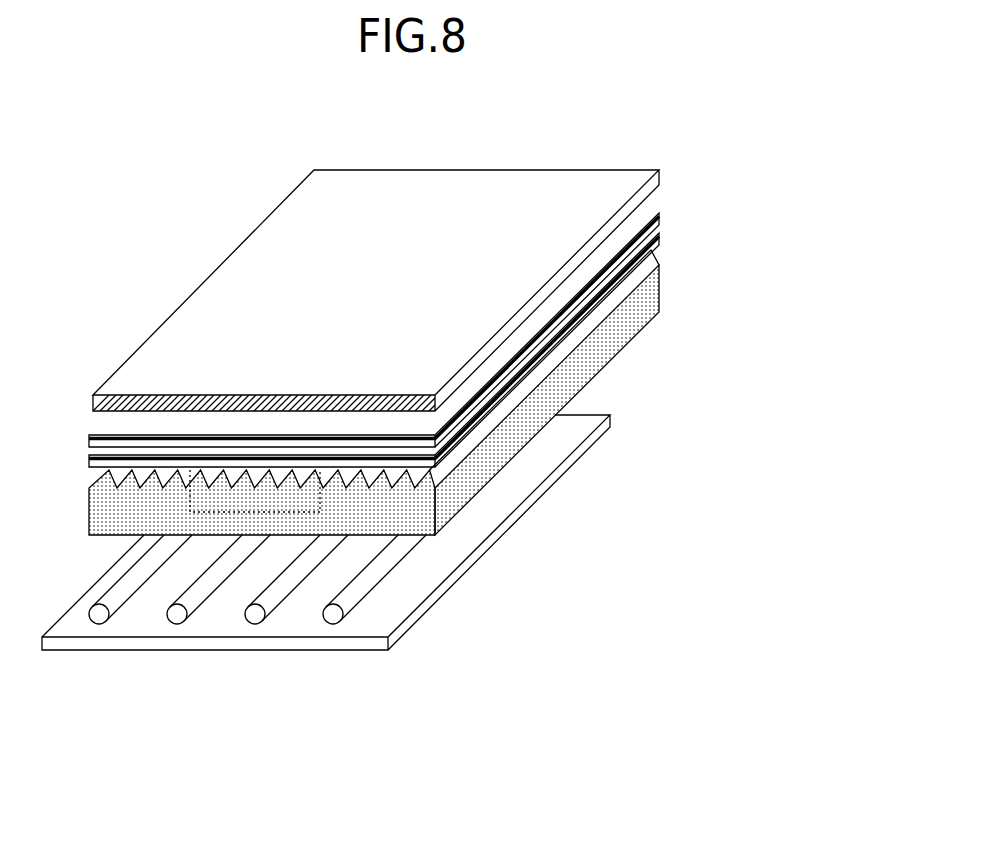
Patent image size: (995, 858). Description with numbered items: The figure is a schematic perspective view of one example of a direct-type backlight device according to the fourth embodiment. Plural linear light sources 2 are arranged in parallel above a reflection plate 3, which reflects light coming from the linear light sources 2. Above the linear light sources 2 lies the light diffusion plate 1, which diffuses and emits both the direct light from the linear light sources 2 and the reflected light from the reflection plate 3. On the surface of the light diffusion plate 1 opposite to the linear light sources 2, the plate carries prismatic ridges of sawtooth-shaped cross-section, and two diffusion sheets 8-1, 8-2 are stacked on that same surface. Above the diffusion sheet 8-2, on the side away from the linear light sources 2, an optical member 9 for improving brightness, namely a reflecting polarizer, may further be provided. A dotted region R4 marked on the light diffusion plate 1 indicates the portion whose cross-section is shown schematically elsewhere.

The optical member for improving brightness 9 is at (536, 184).
The diffusion sheet 8-2 is at (659, 219).
The diffusion sheet 8-1 is at (659, 240).
The light diffusion plate 1 is at (648, 293).
The reflection plate 3 is at (538, 494).
The linear light source 2 is at (382, 563).
The region R4 is at (238, 512).